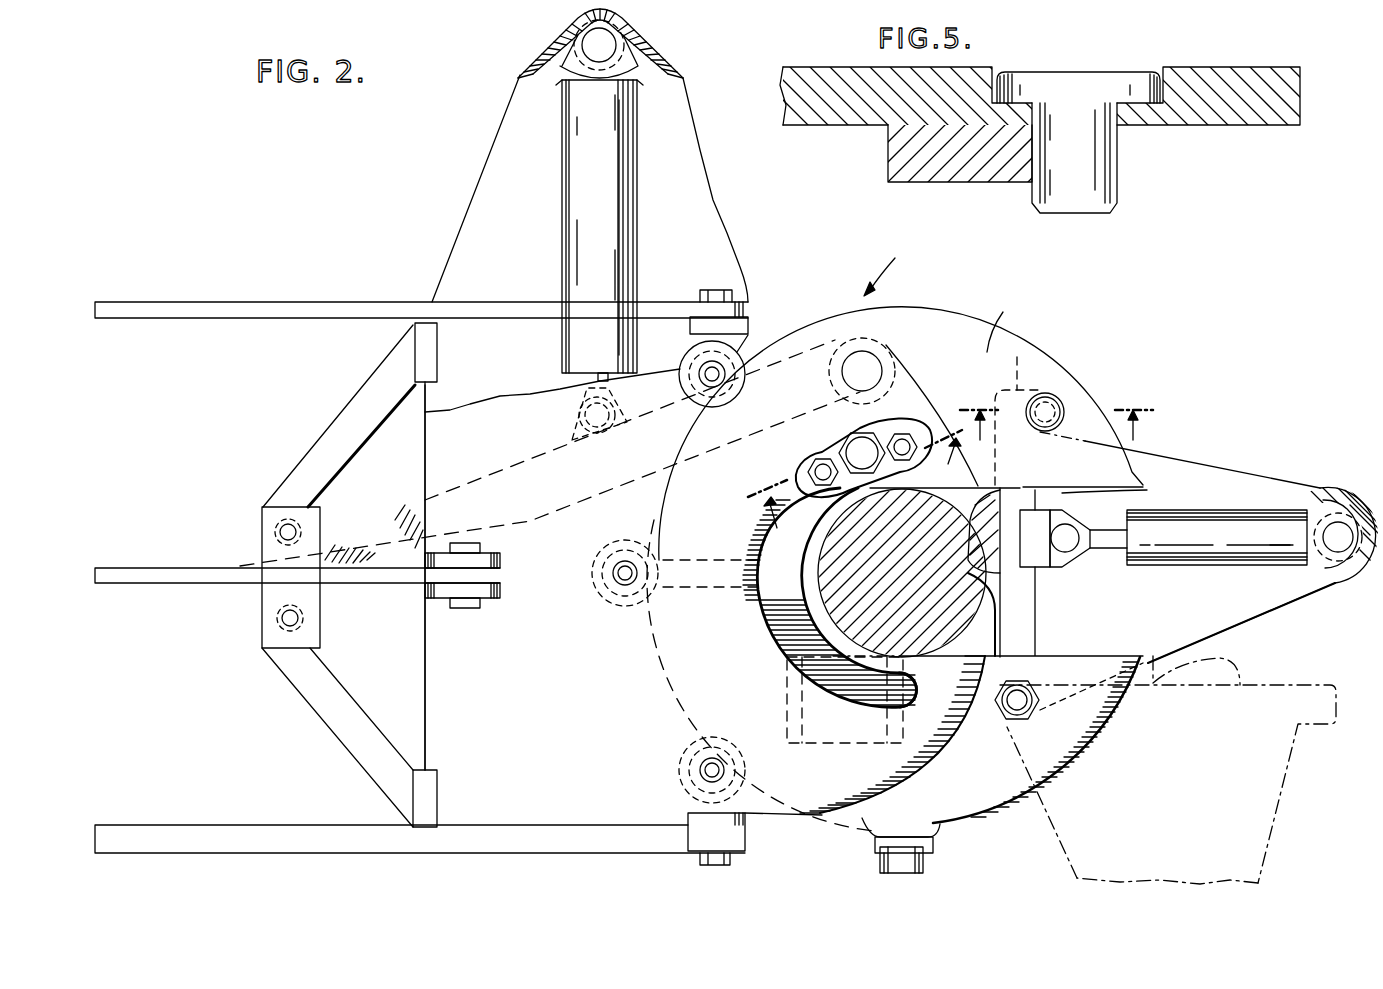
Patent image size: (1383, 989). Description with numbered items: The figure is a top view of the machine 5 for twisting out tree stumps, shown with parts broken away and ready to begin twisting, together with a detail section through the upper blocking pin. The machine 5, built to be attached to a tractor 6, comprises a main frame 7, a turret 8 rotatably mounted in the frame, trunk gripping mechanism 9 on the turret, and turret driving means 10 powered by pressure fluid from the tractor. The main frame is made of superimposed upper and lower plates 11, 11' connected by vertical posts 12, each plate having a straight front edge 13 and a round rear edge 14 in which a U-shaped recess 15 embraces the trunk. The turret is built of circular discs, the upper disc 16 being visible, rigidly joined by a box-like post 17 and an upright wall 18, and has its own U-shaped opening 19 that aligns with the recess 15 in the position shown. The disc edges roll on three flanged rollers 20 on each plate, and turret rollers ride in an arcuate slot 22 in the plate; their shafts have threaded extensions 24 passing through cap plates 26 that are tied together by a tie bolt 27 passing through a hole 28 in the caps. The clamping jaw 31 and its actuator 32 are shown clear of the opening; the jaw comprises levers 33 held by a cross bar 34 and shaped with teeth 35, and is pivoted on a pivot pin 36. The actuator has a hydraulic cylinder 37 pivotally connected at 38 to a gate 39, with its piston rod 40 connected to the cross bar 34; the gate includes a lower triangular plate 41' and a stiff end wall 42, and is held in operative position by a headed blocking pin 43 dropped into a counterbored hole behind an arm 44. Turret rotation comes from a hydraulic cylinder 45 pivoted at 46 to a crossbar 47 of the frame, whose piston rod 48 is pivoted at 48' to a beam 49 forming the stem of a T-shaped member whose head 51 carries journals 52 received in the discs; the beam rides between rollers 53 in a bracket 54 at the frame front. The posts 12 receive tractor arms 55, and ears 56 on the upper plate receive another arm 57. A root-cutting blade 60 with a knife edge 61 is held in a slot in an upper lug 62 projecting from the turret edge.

In FIG. 2, the machine 5 is at (1008, 338).
In FIG. 2, the tractor 6 is at (855, 474).
In FIG. 2, the main frame 7 is at (424, 620).
In FIG. 2, the turret 8 is at (901, 426).
In FIG. 2, the trunk gripping mechanism 9 is at (1205, 480).
In FIG. 2, the turret driving means 10 is at (592, 186).
In FIG. 2, the upper plate 11 is at (586, 422).
In FIG. 2, the lower plate 11' is at (550, 453).
In FIG. 2, the vertical struts or posts 12 is at (735, 325).
In FIG. 2, the front edge 13 is at (424, 668).
In FIG. 2, the rear edge 14 is at (924, 396).
In FIG. 2, the U-shaped opening or recess 15 is at (954, 655).
In FIG. 2, the upper circular disc 16 is at (1052, 398).
In FIG. 5, the upper circular disc 16 is at (1224, 70).
In FIG. 2, the box-like post 17 is at (786, 713).
In FIG. 2, the upright wall 18 is at (710, 552).
In FIG. 2, the U-shaped opening 19 is at (1120, 492).
In FIG. 2, the flanged rollers 20 is at (700, 360).
In FIG. 2, the arcuate slot 22 is at (772, 618).
In FIG. 2, the threaded extensions 24 is at (810, 470).
In FIG. 2, the cap plates 26 is at (815, 455).
In FIG. 2, the tie bolt 27 is at (852, 450).
In FIG. 2, the hole 28 is at (855, 442).
In FIG. 2, the clamping jaw 31 is at (1020, 605).
In FIG. 2, the actuator 32 is at (1232, 510).
In FIG. 2, the levers 33 is at (1020, 640).
In FIG. 2, the cross bar 34 is at (1066, 522).
In FIG. 2, the teeth 35 is at (978, 540).
In FIG. 2, the pivot pin 36 is at (1025, 707).
In FIG. 2, the hydraulic cylinder 37 is at (1180, 562).
In FIG. 2, the pivotal connection 38 is at (1340, 520).
In FIG. 2, the gate 39 is at (1180, 445).
In FIG. 2, the piston rod 40 is at (1108, 550).
In FIG. 2, the lower triangular plate 41' is at (1241, 623).
In FIG. 2, the end wall 42 is at (1345, 585).
In FIG. 2, the upper blocking pin 43 is at (1066, 406).
In FIG. 5, the upper blocking pin 43 is at (1087, 88).
In FIG. 2, the arms 44 is at (1043, 380).
In FIG. 5, the arms 44 is at (888, 153).
In FIG. 2, the hydraulic cylinder 45 is at (612, 236).
In FIG. 2, the pivotal connection 46 is at (594, 42).
In FIG. 2, the crossbar 47 is at (652, 50).
In FIG. 2, the piston rod 48 is at (564, 378).
In FIG. 2, the pivotal connection 48' is at (572, 414).
In FIG. 2, the beam 49 is at (408, 520).
In FIG. 2, the head 51 is at (866, 351).
In FIG. 2, the journals 52 is at (884, 362).
In FIG. 2, the rollers 53 is at (276, 528).
In FIG. 2, the bracket 54 is at (262, 612).
In FIG. 2, the arms 55 is at (400, 302).
In FIG. 2, the ears 56 is at (505, 592).
In FIG. 2, the arm 57 is at (155, 576).
In FIG. 2, the blade 60 is at (880, 866).
In FIG. 2, the knife edge 61 is at (925, 862).
In FIG. 2, the upper lug 62 is at (935, 840).